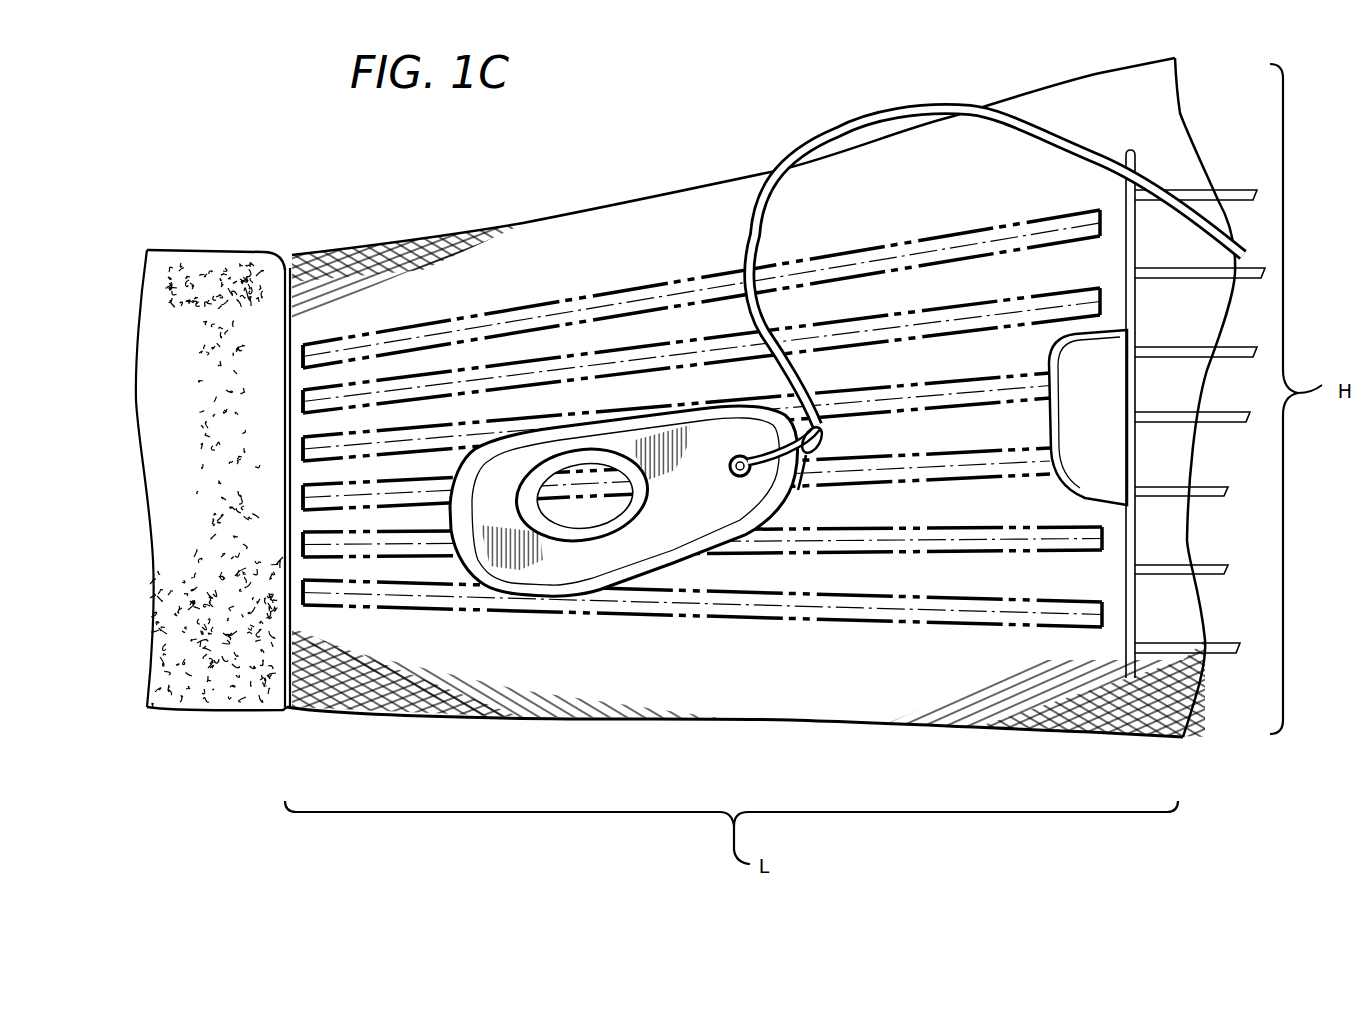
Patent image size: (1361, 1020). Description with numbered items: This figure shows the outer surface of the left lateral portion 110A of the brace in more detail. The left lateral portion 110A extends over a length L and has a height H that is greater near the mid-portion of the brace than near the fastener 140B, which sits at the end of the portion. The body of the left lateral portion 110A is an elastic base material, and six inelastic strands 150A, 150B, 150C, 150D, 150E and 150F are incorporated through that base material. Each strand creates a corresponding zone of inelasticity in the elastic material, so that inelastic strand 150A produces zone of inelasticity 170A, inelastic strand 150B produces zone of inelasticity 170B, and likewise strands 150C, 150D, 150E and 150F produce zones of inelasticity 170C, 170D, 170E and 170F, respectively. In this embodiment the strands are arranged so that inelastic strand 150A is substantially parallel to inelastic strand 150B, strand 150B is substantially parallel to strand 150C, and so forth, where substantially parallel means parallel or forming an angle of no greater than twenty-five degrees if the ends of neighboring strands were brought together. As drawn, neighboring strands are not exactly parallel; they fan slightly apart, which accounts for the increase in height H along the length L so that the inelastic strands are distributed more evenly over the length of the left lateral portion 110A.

The left lateral portion 110A is at (628, 707).
The fastener 140B is at (190, 262).
The inelastic strand 150A is at (355, 342).
The inelastic strand 150B is at (458, 372).
The inelastic strand 150C is at (488, 423).
The inelastic strand 150D is at (865, 470).
The inelastic strand 150E is at (963, 540).
The inelastic strand 150F is at (1058, 617).
The zone of inelasticity 170A is at (303, 360).
The zone of inelasticity 170B is at (303, 411).
The zone of inelasticity 170C is at (303, 454).
The zone of inelasticity 170D is at (303, 503).
The zone of inelasticity 170E is at (303, 542).
The zone of inelasticity 170F is at (303, 592).